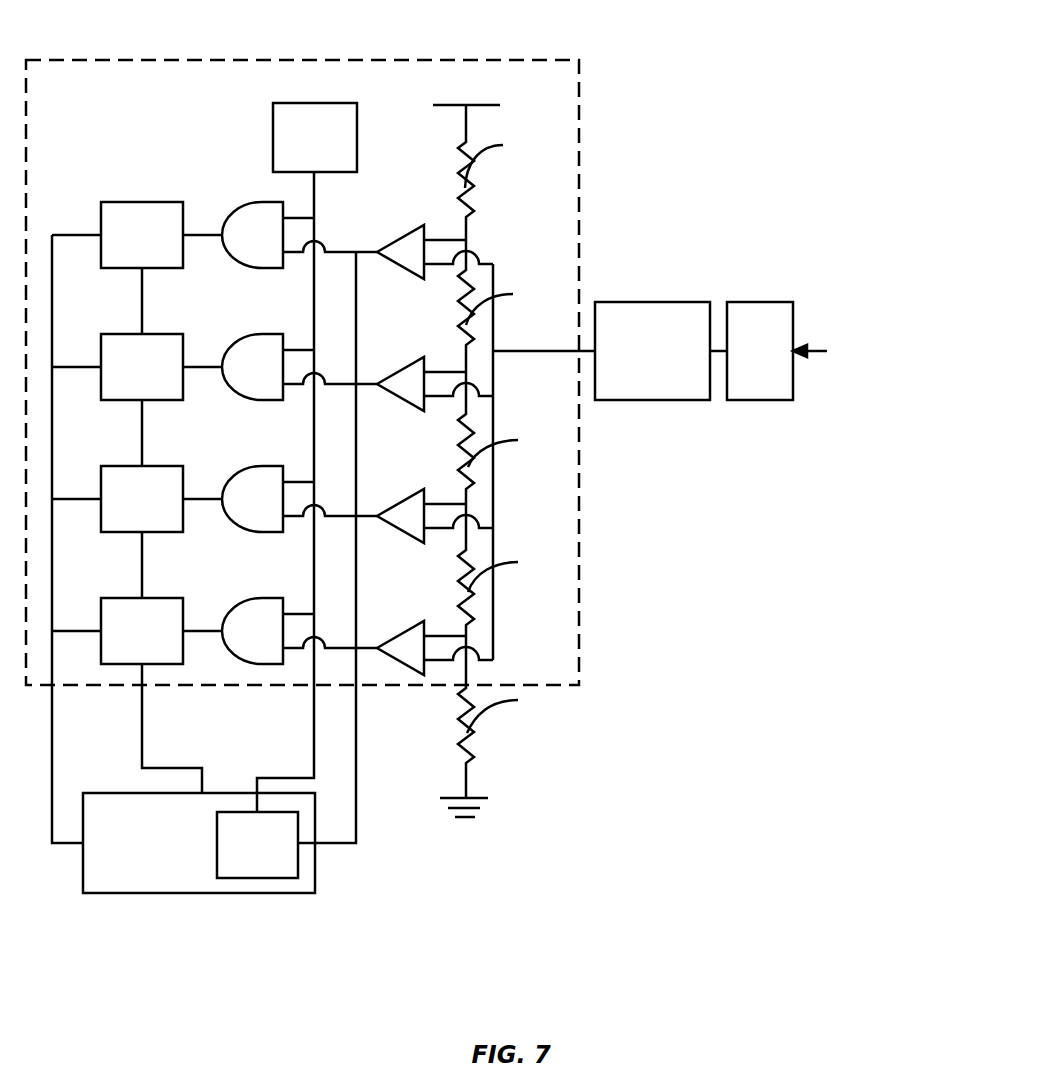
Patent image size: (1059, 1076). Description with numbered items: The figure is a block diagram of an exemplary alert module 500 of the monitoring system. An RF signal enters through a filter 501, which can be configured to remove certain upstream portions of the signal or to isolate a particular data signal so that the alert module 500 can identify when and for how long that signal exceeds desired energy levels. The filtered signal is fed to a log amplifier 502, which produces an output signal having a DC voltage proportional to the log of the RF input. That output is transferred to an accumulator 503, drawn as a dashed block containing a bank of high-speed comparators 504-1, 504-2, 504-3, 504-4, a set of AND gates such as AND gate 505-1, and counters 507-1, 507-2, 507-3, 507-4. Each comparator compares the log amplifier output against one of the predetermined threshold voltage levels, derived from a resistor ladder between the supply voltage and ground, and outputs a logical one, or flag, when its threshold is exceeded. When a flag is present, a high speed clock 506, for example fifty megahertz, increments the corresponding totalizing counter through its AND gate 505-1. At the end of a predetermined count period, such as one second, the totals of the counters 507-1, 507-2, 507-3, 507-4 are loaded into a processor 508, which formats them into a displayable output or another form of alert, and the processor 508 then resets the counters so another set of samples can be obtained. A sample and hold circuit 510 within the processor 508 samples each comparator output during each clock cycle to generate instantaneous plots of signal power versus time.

The alert module 500 is at (677, 72).
The filter 501 is at (741, 375).
The log amplifier 502 is at (633, 388).
The accumulator 503 is at (580, 193).
The comparator 504-1 is at (389, 244).
The comparator 504-2 is at (389, 376).
The comparator 504-3 is at (389, 508).
The comparator 504-4 is at (389, 640).
The AND gate 505-1 is at (232, 210).
The high speed clock 506 is at (296, 161).
The counter 507-1 is at (114, 258).
The counter 507-2 is at (114, 390).
The counter 507-3 is at (114, 522).
The counter 507-4 is at (114, 654).
The processor 508 is at (123, 862).
The sample and hold circuit 510 is at (238, 867).